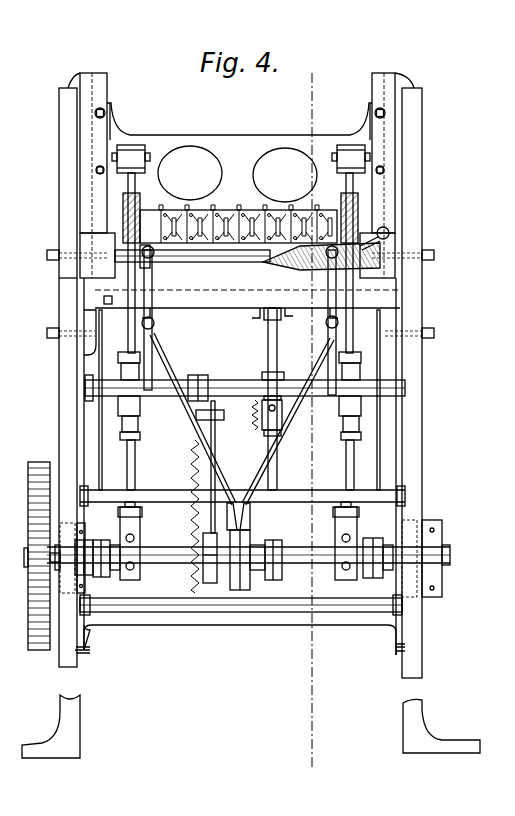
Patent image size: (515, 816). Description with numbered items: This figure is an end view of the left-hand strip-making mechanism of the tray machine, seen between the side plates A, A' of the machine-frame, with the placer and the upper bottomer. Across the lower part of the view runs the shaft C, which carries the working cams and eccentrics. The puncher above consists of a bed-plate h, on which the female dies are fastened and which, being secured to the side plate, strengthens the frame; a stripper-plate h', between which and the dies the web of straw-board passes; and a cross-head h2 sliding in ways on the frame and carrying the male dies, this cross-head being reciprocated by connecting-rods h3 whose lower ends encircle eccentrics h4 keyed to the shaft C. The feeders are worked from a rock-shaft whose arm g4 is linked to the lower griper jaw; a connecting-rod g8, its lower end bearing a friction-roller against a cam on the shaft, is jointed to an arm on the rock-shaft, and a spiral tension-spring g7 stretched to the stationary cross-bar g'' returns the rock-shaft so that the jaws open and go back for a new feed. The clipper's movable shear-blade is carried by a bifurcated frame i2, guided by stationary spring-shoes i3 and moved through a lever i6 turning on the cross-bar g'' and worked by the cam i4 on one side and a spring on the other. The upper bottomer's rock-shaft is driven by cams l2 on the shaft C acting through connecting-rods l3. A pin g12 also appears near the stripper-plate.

The side plate A is at (71, 370).
The side plate A' is at (411, 375).
The bed-plate h is at (192, 265).
The stripper-plate h' is at (303, 262).
The cross-head h2 is at (237, 174).
The connecting-rods h3 is at (120, 352).
The eccentrics h4 is at (140, 532).
The arm of the rock-shaft g4 is at (223, 382).
The spring g7 is at (185, 516).
The connecting-rod g8 is at (216, 432).
The stationary cross-bar g'' is at (241, 617).
The pivot pin g12 is at (383, 230).
The bifurcated frame i2 is at (286, 450).
The spring-shoes i3 is at (27, 590).
The cam i4 is at (254, 546).
The lever i6 is at (208, 558).
The cams l2 is at (101, 578).
The connecting-rods l3 is at (239, 400).
The shaft C is at (172, 565).